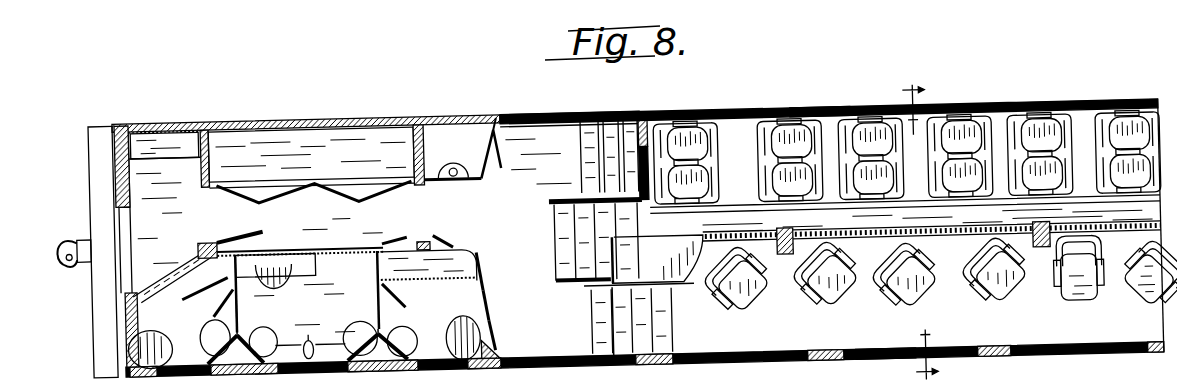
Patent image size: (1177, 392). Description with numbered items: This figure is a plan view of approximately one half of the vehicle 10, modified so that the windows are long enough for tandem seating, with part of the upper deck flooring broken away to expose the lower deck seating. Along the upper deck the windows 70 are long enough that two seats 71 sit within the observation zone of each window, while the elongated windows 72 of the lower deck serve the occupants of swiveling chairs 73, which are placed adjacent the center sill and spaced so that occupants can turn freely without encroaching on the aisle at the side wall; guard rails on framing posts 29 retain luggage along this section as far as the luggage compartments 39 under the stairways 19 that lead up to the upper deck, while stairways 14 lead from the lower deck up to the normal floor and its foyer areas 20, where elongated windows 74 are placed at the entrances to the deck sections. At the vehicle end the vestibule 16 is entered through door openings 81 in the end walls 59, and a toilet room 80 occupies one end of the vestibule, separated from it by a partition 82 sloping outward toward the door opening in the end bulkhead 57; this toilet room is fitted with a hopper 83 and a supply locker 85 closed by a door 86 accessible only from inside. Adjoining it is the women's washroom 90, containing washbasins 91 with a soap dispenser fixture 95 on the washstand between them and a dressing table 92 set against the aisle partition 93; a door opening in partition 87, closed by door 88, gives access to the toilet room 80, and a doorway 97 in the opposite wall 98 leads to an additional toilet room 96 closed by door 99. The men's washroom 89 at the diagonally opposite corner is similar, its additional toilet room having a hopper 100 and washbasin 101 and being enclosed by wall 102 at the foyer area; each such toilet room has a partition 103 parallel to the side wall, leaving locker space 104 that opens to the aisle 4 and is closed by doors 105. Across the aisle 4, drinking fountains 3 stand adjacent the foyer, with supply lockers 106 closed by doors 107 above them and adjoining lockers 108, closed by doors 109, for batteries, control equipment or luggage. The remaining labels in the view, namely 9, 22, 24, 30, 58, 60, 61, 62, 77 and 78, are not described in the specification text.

The drinking fountains 3 is at (460, 190).
The aisle 4 is at (343, 221).
The coupler 9 is at (70, 233).
The vehicle 10 is at (918, 228).
The stairways 14 is at (580, 166).
The vestibule 16 is at (159, 218).
The stairways 19 is at (590, 162).
The foyer areas 20 is at (600, 278).
The side wall 22 is at (818, 126).
The door post 24 is at (652, 126).
The framing posts 29 is at (781, 272).
The aisle 30 is at (905, 214).
The luggage compartments 39 is at (613, 278).
The end bulkhead 57 is at (215, 163).
The rail 58 is at (236, 247).
The vehicle end walls 59 is at (113, 158).
The locker 60 is at (152, 126).
The shelf 61 is at (176, 141).
The seat 62 is at (1060, 325).
The windows 70 is at (713, 150).
The seats 71 is at (755, 140).
The windows 72 is at (1052, 372).
The chairs 73 is at (742, 325).
The elongated windows 74 is at (527, 130).
The partition 77 is at (833, 224).
The wall 78 is at (889, 356).
The toilet rooms 80 is at (230, 360).
The door openings 81 is at (110, 277).
The partitions 82 is at (173, 273).
The hoppers 83 is at (140, 372).
The supply lockers 85 is at (203, 259).
The doors 86 is at (187, 305).
The partition 87 is at (234, 311).
The door 88 is at (216, 312).
The washroom for men 89 is at (200, 360).
The washroom for women 90 is at (304, 309).
The washbasins 91 is at (255, 362).
The dressing table 92 is at (266, 292).
The aisle partition 93 is at (300, 252).
The soap dispenser fixture 95 is at (300, 366).
The toilet room 96 is at (486, 315).
The doorway 97 is at (373, 299).
The wall 98 is at (374, 275).
The door 99 is at (408, 300).
The hopper 100 is at (472, 370).
The washbasin 101 is at (420, 372).
The wall 102 is at (489, 330).
The partition 103 is at (484, 297).
The locker space 104 is at (398, 280).
The doors 105 is at (445, 243).
The supply lockers 106 is at (447, 154).
The doors 107 is at (508, 128).
The lockers 108 is at (311, 157).
The doors 109 is at (314, 204).